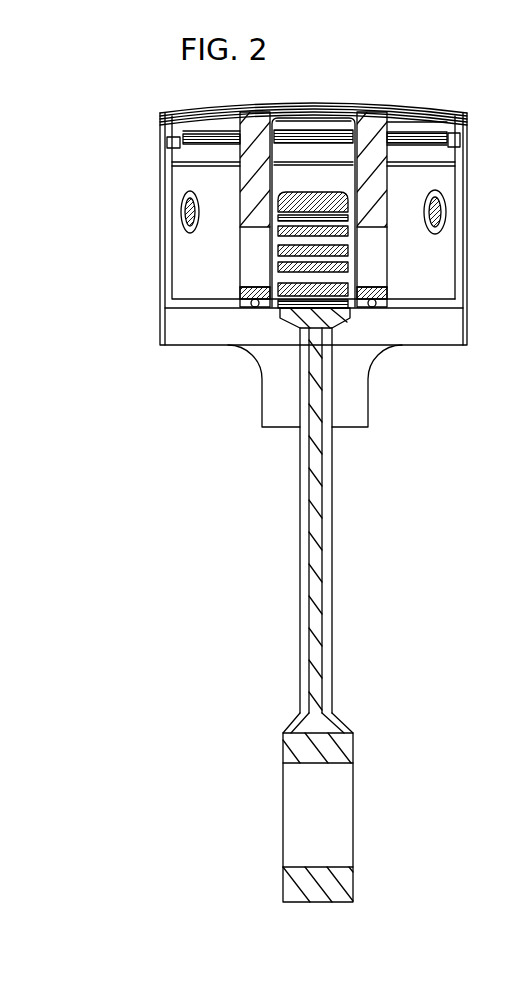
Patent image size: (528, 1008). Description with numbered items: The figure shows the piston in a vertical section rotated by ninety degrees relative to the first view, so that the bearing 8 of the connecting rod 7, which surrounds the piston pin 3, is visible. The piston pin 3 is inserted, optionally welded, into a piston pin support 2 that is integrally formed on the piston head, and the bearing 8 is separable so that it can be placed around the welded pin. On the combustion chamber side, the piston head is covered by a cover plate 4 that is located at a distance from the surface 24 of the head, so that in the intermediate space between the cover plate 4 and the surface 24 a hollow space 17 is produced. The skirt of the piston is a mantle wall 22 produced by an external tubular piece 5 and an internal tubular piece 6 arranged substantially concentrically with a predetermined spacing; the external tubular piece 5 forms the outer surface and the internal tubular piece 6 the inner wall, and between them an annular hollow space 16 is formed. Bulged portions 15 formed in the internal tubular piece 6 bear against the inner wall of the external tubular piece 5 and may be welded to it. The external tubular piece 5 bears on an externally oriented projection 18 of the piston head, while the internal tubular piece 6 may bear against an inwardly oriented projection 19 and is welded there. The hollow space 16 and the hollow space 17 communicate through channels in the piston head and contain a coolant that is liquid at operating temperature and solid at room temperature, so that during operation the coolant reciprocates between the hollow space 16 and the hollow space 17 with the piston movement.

The piston pin support 2 is at (388, 190).
The piston pin 3 is at (257, 232).
The cover plate 4 is at (232, 110).
The external tubular piece 5 is at (468, 237).
The internal tubular piece 6 is at (454, 275).
The connecting rod 7 is at (318, 548).
The bearing 8 is at (292, 330).
The bulged portions 15 is at (198, 208).
The hollow space 16 is at (172, 262).
The hollow space 17 is at (294, 103).
The externally oriented projection 18 is at (167, 152).
The inwardly oriented projection 19 is at (445, 148).
The mantle wall 22 is at (157, 200).
The surface 24 is at (462, 130).